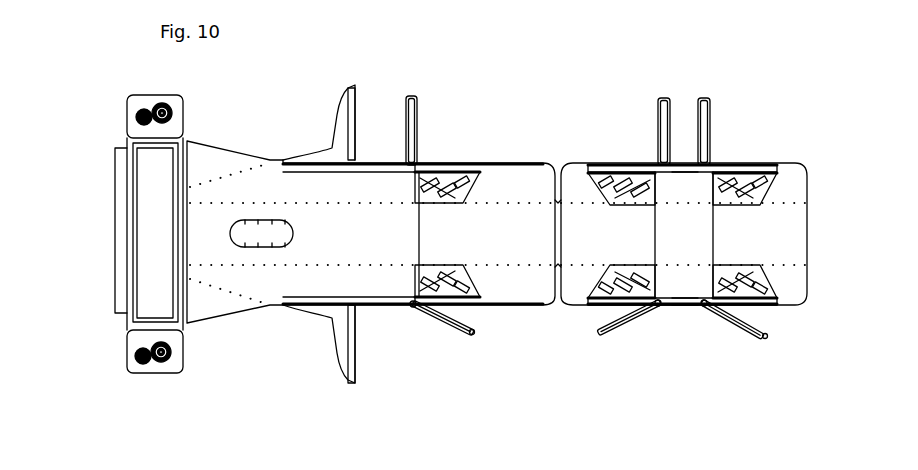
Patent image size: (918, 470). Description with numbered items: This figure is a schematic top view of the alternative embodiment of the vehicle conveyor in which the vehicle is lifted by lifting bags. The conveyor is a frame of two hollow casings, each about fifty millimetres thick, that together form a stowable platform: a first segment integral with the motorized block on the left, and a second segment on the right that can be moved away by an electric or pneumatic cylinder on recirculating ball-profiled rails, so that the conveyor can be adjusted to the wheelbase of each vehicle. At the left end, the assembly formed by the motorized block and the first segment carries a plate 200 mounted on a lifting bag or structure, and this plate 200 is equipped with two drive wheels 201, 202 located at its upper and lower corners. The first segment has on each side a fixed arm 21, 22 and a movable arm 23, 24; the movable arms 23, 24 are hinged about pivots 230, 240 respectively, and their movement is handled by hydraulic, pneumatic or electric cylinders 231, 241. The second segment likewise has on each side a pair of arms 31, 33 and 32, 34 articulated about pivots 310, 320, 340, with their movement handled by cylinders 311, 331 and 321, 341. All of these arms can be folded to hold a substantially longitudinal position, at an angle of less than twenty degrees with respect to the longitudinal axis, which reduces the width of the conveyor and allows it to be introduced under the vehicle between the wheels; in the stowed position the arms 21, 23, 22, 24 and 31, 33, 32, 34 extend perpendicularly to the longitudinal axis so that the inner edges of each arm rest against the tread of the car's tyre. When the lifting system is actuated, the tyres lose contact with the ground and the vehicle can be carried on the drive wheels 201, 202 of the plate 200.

The plate 200 is at (115, 248).
The drive wheel 201 is at (145, 107).
The drive wheel 202 is at (138, 378).
The fixed arm 21 is at (330, 112).
The fixed arm 22 is at (342, 355).
The movable arm 23 is at (411, 95).
The pivot 230 is at (418, 165).
The cylinder 231 is at (460, 168).
The movable arm 24 is at (463, 345).
The pivot 240 is at (412, 316).
The cylinder 241 is at (475, 328).
The arm 31 is at (667, 97).
The pivot 310 is at (667, 165).
The cylinder 311 is at (626, 170).
The arm 33 is at (708, 98).
The cylinder 331 is at (748, 172).
The arm 32 is at (637, 335).
The pivot 320 is at (650, 302).
The cylinder 321 is at (662, 318).
The arm 34 is at (732, 338).
The pivot 340 is at (705, 327).
The cylinder 341 is at (770, 328).